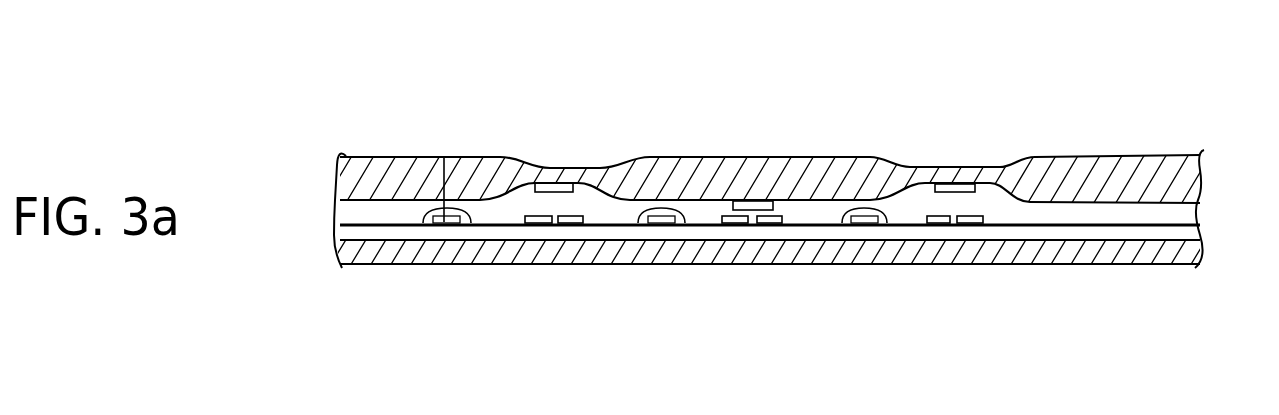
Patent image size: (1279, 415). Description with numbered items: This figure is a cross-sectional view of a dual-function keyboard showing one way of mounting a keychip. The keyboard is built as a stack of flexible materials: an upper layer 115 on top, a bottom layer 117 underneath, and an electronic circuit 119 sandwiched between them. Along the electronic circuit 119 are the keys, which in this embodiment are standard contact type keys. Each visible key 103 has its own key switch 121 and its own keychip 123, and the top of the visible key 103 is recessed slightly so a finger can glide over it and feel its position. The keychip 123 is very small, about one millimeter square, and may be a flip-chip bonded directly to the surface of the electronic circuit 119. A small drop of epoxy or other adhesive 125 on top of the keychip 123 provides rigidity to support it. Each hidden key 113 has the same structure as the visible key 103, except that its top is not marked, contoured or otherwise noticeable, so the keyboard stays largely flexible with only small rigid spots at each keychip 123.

The visible key 103 is at (670, 127).
The hidden key 113 is at (772, 160).
The upper layer 115 is at (1097, 203).
The bottom layer 117 is at (1082, 253).
The electronic circuit 119 is at (378, 223).
The key switch 121 is at (552, 225).
The keychip 123 is at (477, 158).
The epoxy or other adhesive 125 is at (455, 225).